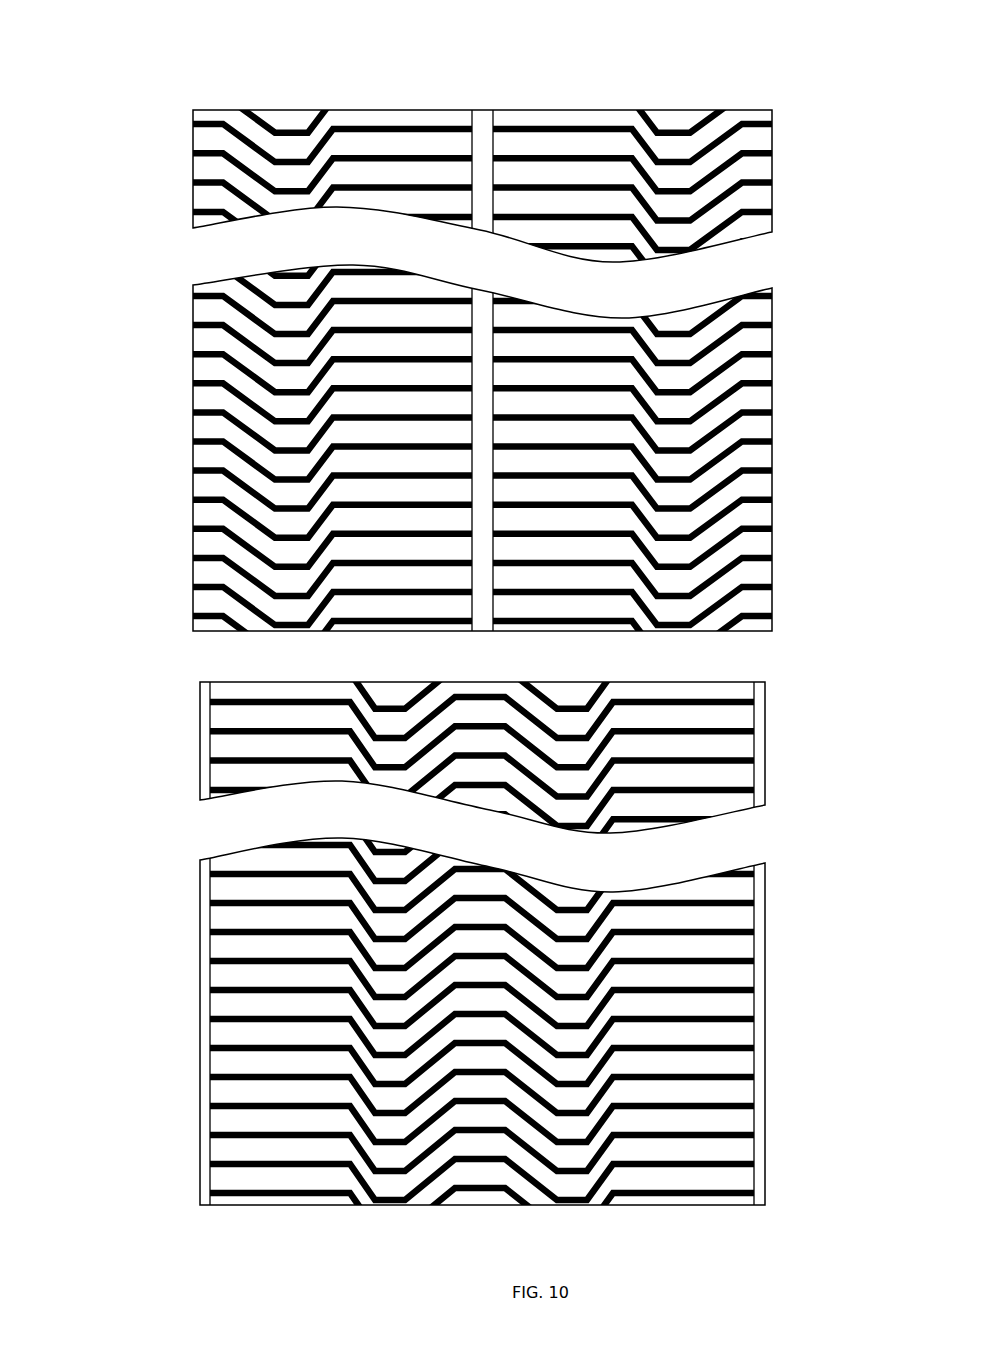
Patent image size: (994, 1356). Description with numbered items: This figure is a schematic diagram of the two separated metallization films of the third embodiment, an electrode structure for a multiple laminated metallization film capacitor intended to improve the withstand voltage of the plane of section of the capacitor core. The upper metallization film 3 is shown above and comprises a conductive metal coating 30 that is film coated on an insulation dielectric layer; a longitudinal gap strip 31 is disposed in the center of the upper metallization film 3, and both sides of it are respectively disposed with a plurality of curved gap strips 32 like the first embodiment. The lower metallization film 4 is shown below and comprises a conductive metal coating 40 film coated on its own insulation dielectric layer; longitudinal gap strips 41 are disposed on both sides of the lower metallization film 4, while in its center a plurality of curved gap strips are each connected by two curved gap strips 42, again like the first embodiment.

The upper metallization film 3 is at (466, 333).
The conductive metal coating 30 is at (396, 120).
The longitudinal gap strip 31 is at (481, 145).
The curved gap strips 32 is at (770, 150).
The lower metallization film 4 is at (451, 948).
The conductive metal coating 40 is at (725, 1123).
The longitudinal gap strips 41 is at (768, 1040).
The curved gap strips 42 is at (723, 733).